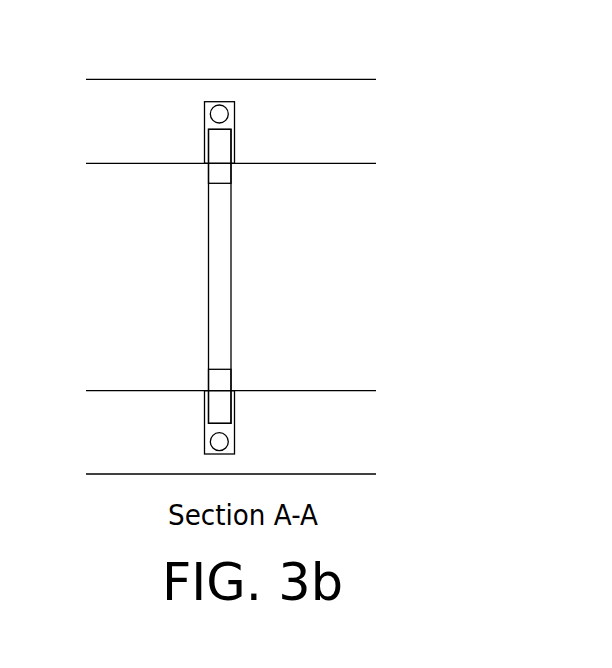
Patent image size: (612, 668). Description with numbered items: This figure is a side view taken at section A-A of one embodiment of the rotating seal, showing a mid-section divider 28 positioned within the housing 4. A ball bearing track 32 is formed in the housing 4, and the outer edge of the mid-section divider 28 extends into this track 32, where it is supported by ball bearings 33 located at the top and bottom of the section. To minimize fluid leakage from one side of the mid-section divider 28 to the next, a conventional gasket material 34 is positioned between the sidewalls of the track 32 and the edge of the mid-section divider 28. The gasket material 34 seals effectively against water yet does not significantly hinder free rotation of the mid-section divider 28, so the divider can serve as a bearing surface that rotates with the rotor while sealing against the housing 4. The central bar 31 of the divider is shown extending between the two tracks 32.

The housing 4 is at (349, 133).
The mid-section divider 28 is at (241, 368).
The bar 31 is at (219, 218).
The ball bearing track 32 is at (230, 102).
The ball bearings 33 is at (196, 113).
The gasket material 34 is at (197, 153).